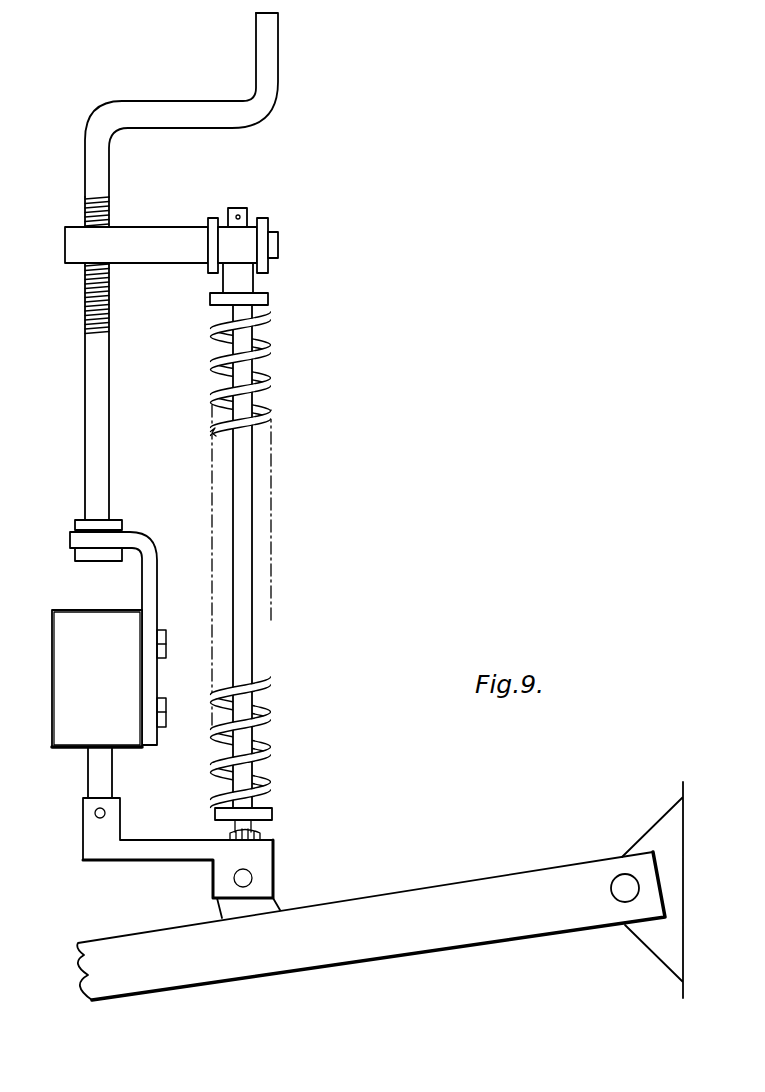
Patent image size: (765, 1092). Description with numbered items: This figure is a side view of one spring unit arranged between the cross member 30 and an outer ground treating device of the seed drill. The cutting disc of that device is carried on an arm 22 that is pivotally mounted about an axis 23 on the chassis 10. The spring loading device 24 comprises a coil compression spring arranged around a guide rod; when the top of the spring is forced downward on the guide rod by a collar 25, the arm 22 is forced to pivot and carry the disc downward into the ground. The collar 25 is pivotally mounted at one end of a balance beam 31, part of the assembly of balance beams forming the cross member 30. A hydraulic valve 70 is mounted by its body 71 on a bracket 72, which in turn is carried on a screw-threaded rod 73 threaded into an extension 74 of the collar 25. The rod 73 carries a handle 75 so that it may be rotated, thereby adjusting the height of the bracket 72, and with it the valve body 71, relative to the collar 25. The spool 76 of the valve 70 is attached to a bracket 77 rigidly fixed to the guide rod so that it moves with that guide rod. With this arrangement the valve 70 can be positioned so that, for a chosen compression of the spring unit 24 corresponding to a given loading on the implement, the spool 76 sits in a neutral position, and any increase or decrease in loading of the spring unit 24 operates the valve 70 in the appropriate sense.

The chassis 10 is at (673, 822).
The arm 22 is at (452, 912).
The axis 23 is at (627, 892).
The spring loading device 24 is at (268, 417).
The collar 25 is at (242, 243).
The cross member 30 is at (282, 253).
The balance beam 31 is at (262, 242).
The hydraulic valve 70 is at (88, 608).
The valve body 71 is at (70, 729).
The bracket 72 is at (148, 546).
The screw-threaded rod 73 is at (98, 402).
The extension 74 is at (162, 240).
The handle 75 is at (263, 72).
The spool 76 is at (97, 777).
The bracket 77 is at (180, 853).